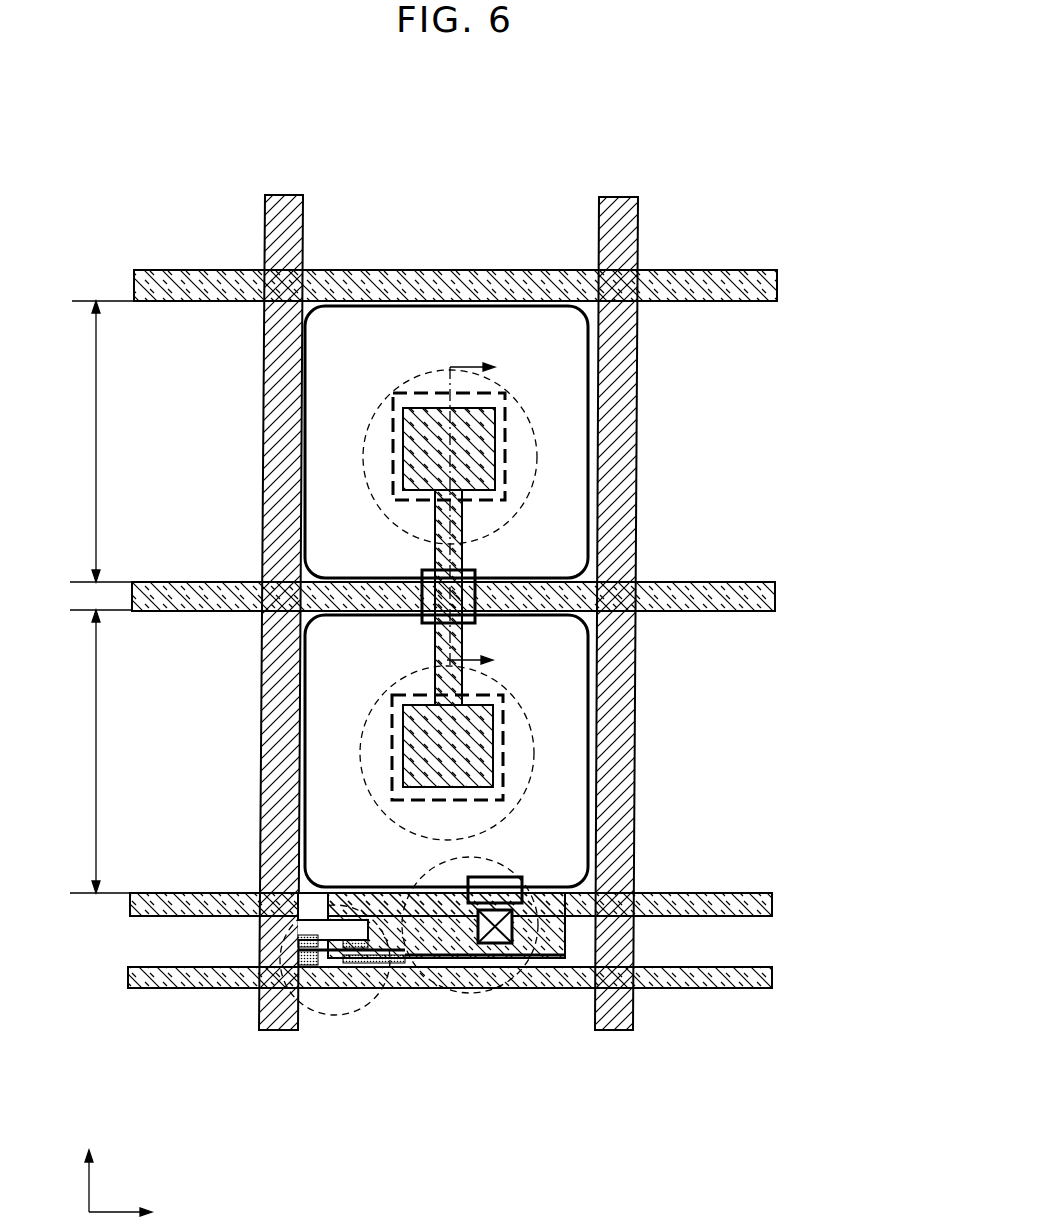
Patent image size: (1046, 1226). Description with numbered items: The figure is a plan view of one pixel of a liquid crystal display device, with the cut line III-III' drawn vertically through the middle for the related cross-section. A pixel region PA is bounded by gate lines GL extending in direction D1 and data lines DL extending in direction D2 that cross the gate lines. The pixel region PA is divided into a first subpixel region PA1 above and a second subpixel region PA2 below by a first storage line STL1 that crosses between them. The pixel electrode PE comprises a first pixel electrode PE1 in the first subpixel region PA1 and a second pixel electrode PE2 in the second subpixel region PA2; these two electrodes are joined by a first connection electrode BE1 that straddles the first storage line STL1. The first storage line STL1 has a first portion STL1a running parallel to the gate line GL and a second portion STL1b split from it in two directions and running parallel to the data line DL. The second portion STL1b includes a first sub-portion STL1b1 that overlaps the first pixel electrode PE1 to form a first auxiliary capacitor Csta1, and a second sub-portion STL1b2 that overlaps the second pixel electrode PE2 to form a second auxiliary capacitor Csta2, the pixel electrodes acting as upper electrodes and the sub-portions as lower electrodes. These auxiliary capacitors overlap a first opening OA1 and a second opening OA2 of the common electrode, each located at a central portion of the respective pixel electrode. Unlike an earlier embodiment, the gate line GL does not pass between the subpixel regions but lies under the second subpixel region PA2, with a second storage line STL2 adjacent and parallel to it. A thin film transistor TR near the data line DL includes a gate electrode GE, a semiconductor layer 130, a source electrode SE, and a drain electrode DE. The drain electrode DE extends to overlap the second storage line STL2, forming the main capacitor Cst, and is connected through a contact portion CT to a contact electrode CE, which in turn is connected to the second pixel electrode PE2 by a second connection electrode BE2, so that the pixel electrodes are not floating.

The pixel region PA is at (463, 211).
The first subpixel region PA1 is at (92, 441).
The second subpixel region PA2 is at (91, 751).
The data line DL is at (272, 377).
The gate line GL is at (743, 987).
The first storage line STL1 is at (812, 88).
The first portion of the first storage line STL1a is at (742, 593).
The second portion of the first storage line STL1b is at (708, 118).
The second-1 sub-portion STL1b1 is at (495, 455).
The second-2 sub-portion STL1b2 is at (495, 752).
The second storage line STL2 is at (733, 905).
The pixel electrode PE is at (155, 626).
The first pixel electrode PE1 is at (327, 545).
The second pixel electrode PE2 is at (325, 665).
The first auxiliary capacitor Csta1 is at (415, 380).
The second auxiliary capacitor Csta2 is at (532, 715).
The first opening OA1 is at (505, 408).
The second opening OA2 is at (505, 790).
The first connection electrode BE1 is at (475, 618).
The second connection electrode BE2 is at (522, 880).
The main capacitor Cst is at (540, 965).
The contact electrode CE is at (515, 958).
The contact portion CT is at (488, 945).
The thin film transistor TR is at (128, 996).
The gate electrode GE is at (300, 940).
The source electrode SE is at (300, 955).
The semiconductor layer 130 is at (345, 962).
The drain electrode DE is at (400, 960).
The section line III is at (489, 512).
The section line III' is at (490, 664).
The direction D1 is at (139, 1212).
The direction D2 is at (90, 1167).